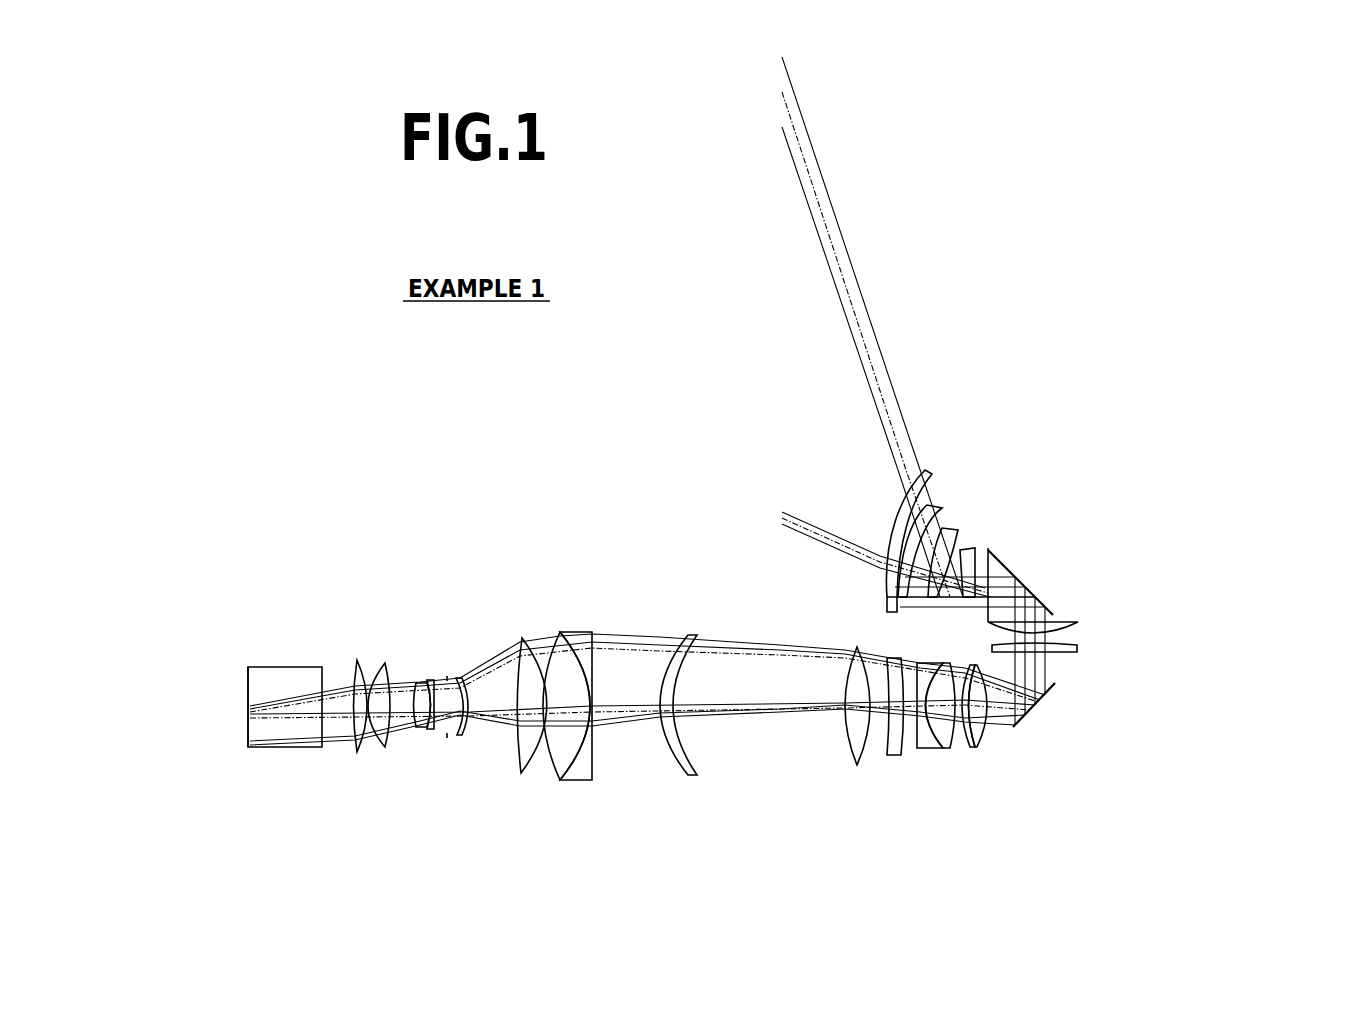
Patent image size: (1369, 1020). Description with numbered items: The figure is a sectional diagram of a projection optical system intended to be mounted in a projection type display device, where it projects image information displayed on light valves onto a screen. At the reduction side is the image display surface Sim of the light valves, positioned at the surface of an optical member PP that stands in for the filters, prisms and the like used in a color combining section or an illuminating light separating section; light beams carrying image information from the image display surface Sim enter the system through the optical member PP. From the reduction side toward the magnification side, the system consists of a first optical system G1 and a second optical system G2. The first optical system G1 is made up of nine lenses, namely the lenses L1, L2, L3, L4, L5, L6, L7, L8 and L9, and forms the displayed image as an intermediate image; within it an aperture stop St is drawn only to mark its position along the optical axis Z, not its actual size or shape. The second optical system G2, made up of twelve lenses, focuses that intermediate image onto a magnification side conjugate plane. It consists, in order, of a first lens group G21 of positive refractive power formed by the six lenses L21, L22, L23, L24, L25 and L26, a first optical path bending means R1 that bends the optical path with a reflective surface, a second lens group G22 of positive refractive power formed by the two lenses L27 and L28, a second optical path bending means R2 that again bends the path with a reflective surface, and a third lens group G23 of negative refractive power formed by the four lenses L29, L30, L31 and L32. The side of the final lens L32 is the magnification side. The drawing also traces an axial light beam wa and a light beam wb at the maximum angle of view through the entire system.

The image display surface Sim is at (248, 690).
The optical member PP is at (288, 668).
The lens L1 is at (359, 753).
The lens L2 is at (385, 748).
The lens L3 is at (420, 728).
The lens L4 is at (431, 730).
The lens L5 is at (462, 736).
The lens L6 is at (522, 773).
The lens L7 is at (558, 780).
The lens L8 is at (580, 781).
The lens L9 is at (688, 776).
The aperture stop St is at (447, 738).
The first optical system G1 is at (685, 842).
The lens L21 is at (858, 767).
The lens L22 is at (895, 757).
The lens L23 is at (933, 749).
The lens L24 is at (953, 749).
The lens L25 is at (970, 748).
The lens L26 is at (985, 748).
The first lens group G21 is at (1196, 758).
The first optical path bending means R1 is at (1045, 695).
The lens L27 is at (1077, 650).
The lens L28 is at (1078, 627).
The second lens group G22 is at (1196, 642).
The second optical path bending means R2 is at (1040, 600).
The lens L29 is at (975, 550).
The lens L30 is at (957, 530).
The lens L31 is at (940, 508).
The final lens L32 is at (930, 470).
The third lens group G23 is at (1196, 457).
The second optical system G2 is at (1262, 503).
The optical axis Z is at (880, 581).
The axial light beam wa is at (779, 502).
The light beam at a maximum angle of view wb is at (776, 48).